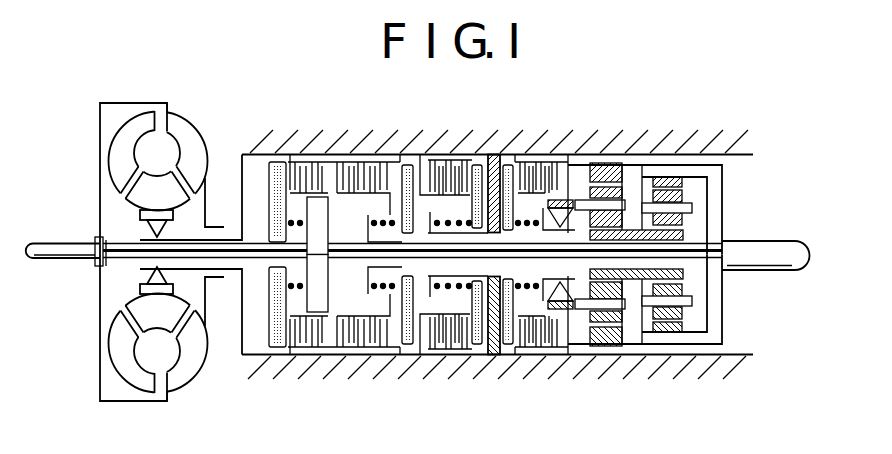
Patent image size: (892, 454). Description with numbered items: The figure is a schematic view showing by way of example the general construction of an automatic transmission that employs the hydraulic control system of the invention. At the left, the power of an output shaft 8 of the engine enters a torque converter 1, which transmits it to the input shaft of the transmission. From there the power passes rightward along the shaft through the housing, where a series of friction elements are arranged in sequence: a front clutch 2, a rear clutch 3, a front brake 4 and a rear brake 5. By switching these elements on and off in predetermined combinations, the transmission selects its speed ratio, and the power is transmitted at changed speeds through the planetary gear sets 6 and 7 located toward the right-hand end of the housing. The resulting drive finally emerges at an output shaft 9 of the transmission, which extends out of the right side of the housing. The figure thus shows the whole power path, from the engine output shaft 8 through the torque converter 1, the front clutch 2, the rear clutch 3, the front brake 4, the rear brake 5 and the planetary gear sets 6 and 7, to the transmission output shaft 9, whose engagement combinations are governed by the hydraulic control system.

The torque converter 1 is at (157, 102).
The front clutch 2 is at (317, 163).
The rear clutch 3 is at (378, 162).
The front brake 4 is at (458, 168).
The rear brake 5 is at (539, 165).
The planetary gear set 6 is at (608, 163).
The planetary gear set 7 is at (670, 176).
The output shaft of an engine 8 is at (61, 247).
The output shaft of the transmission 9 is at (749, 254).